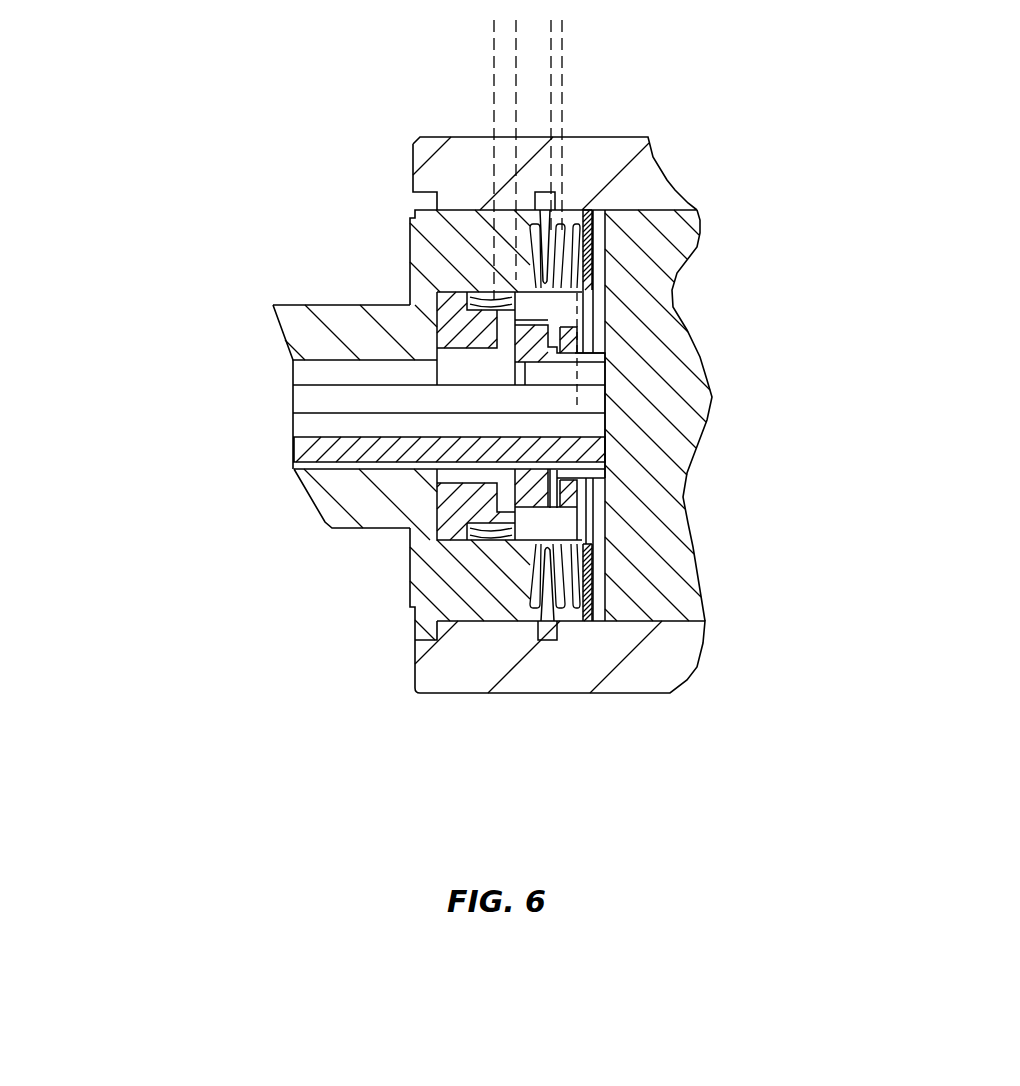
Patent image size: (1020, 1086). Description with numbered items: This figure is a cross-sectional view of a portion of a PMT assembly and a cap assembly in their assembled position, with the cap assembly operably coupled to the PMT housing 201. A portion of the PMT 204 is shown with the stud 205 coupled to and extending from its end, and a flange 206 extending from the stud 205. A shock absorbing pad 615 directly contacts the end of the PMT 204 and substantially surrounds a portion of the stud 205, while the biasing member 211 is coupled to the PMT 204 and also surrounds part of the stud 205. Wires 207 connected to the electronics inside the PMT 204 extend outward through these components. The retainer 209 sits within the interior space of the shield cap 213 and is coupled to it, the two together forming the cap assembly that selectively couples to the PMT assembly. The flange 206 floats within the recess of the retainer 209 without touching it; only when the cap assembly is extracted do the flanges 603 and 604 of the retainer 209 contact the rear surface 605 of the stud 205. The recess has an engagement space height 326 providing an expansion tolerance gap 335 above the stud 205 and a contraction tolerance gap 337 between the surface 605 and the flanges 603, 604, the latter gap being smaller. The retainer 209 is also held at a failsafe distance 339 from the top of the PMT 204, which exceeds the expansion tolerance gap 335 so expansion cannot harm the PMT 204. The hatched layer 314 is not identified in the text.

The PMT housing 201 is at (641, 157).
The PMT 204 is at (662, 248).
The stud 205 is at (587, 473).
The flange 206 is at (532, 490).
The wires 207 is at (317, 452).
The retainer 209 is at (465, 502).
The biasing member 211 is at (567, 545).
The shield cap 213 is at (335, 512).
The lower hatched strip 314 is at (593, 563).
The engagement space height 326 is at (494, 103).
The expansion tolerance gap 335 is at (516, 67).
The contraction tolerance gap 337 is at (551, 67).
The failsafe distance 339 is at (577, 400).
The flange of the retainer 603 is at (606, 343).
The flange of the retainer 604 is at (570, 493).
The rear surface of the stud 605 is at (552, 347).
The shock absorbing pad 615 is at (614, 627).